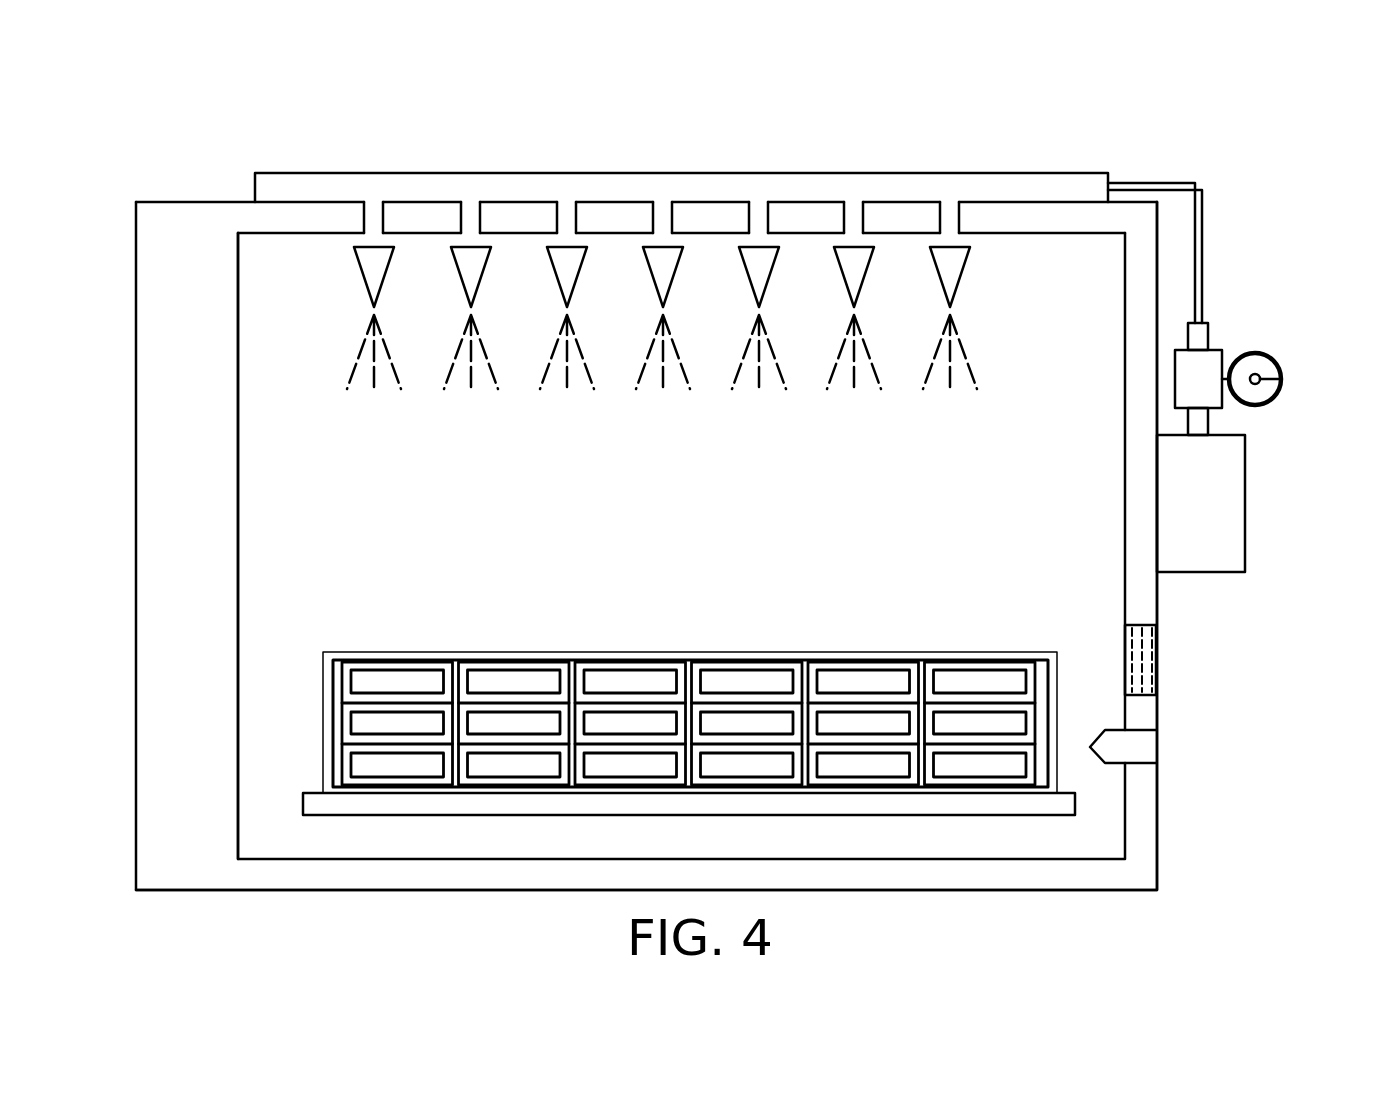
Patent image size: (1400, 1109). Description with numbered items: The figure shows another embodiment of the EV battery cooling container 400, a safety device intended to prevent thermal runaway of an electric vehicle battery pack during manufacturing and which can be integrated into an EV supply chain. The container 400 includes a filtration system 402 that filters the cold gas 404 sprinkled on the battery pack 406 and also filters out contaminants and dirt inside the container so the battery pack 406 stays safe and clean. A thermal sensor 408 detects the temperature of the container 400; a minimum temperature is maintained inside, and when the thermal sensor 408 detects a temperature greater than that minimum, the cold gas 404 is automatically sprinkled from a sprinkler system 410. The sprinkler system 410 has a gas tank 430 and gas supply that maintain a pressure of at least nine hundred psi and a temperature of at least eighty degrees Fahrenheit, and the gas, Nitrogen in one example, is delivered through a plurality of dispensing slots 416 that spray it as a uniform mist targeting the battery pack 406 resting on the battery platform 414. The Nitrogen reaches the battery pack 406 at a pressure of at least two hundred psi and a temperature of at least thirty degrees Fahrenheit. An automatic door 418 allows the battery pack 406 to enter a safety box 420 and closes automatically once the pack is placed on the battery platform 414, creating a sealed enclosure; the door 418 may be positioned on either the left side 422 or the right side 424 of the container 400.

The EV battery cooling container 400 is at (185, 145).
The filtration system 402 is at (1142, 650).
The cold gas 404 is at (387, 375).
The battery pack 406 is at (392, 678).
The thermal sensor 408 is at (1143, 750).
The sprinkler system 410 is at (1127, 180).
The battery platform 414 is at (403, 804).
The dispensing slots 416 is at (373, 233).
The automatic door 418 is at (193, 313).
The safety box 420 is at (208, 506).
The left side 422 is at (127, 742).
The right side 424 is at (1175, 833).
The gas tank 430 is at (1208, 497).